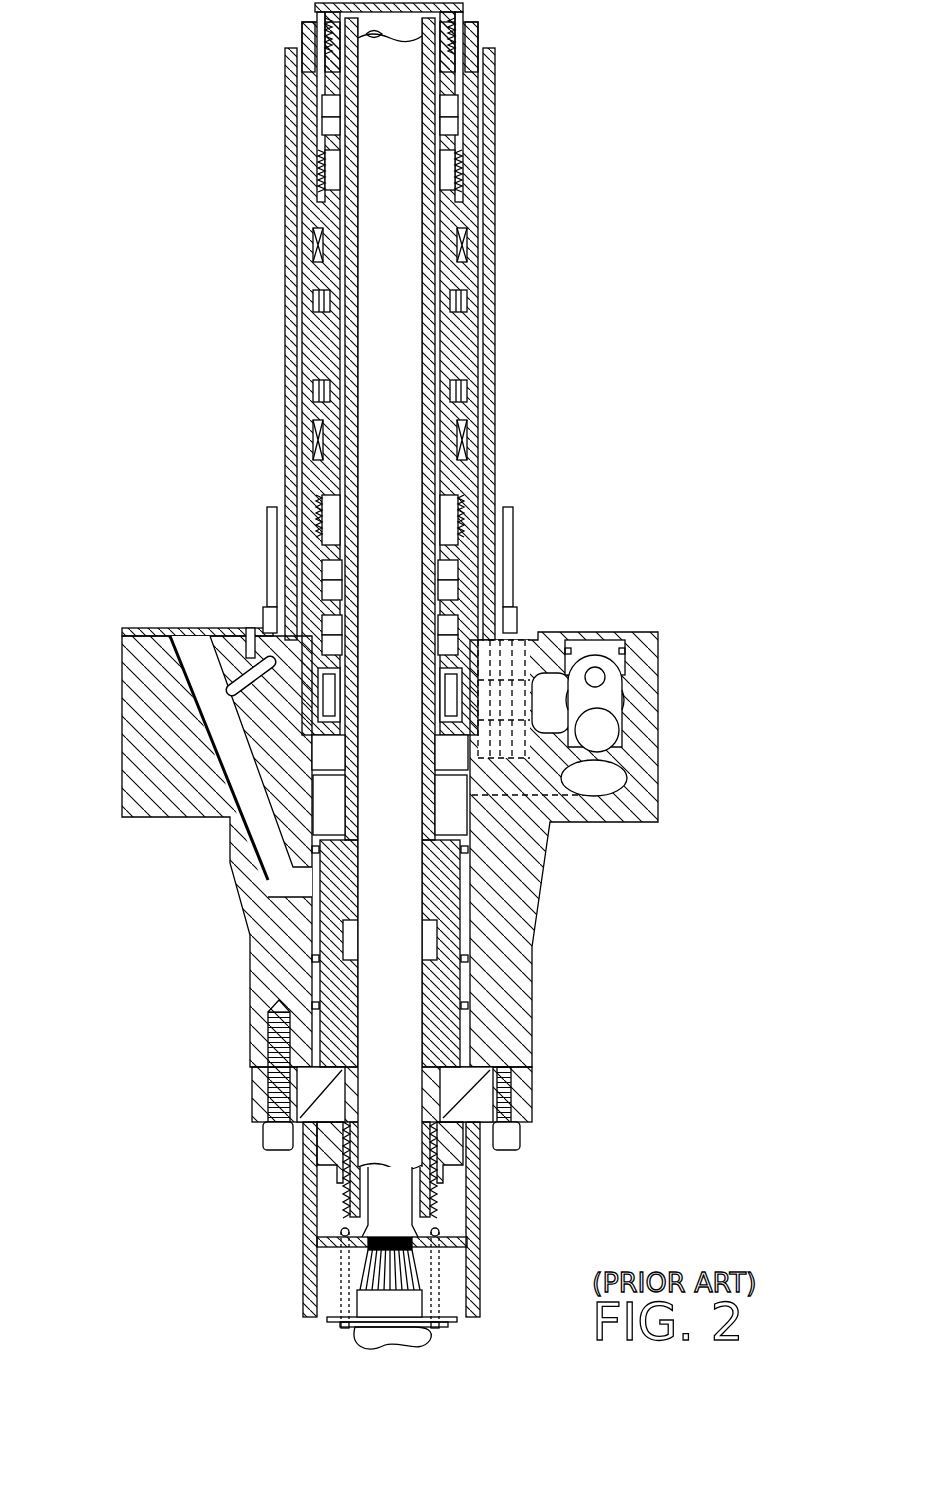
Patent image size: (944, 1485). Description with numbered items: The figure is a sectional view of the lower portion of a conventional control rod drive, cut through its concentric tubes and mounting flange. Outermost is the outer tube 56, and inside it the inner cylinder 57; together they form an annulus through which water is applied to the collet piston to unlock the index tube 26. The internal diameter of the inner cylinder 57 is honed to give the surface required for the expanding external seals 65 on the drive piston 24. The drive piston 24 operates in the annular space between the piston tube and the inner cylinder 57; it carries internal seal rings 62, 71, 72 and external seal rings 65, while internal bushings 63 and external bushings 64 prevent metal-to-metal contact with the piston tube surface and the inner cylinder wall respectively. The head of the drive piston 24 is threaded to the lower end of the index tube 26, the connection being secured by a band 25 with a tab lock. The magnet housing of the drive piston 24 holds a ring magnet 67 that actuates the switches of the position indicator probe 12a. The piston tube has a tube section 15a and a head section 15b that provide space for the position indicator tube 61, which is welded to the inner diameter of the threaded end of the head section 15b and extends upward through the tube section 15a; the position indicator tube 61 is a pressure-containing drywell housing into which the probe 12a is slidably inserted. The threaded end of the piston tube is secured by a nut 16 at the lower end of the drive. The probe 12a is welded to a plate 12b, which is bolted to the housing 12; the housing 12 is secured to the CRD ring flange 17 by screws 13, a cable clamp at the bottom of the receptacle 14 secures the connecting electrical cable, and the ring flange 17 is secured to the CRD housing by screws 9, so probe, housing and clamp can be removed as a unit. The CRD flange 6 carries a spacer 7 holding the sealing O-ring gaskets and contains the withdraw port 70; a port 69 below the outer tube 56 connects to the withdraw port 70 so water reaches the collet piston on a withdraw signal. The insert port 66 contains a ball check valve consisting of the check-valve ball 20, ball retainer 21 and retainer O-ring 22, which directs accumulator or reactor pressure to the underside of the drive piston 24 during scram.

The CRD flange 6 is at (122, 765).
The spacer 7 is at (140, 628).
The screws 9 is at (272, 1140).
The housing 12 is at (482, 1258).
The position indicator probe 12a is at (400, 1225).
The plate 12b is at (306, 1276).
The screws 13 is at (512, 1140).
The receptacle 14 is at (420, 1300).
The tube section 15a is at (440, 750).
The head section 15b is at (438, 860).
The nut 16 is at (462, 1200).
The CRD ring flange 17 is at (532, 1092).
The check-valve ball 20 is at (615, 762).
The ball retainer 21 is at (605, 735).
The retainer O-ring 22 is at (660, 645).
The drive piston 24 is at (322, 350).
The bands 25 is at (482, 58).
The index tube 26 is at (463, 10).
The outer tube 56 is at (495, 200).
The inner cylinder 57 is at (470, 340).
The position indicator tube 61 is at (408, 85).
The internal seal rings 62 is at (328, 128).
The internal bushings 63 is at (340, 170).
The external bushings 64 is at (462, 255).
The external seal rings 65 is at (460, 300).
The insert port 66 is at (600, 645).
The ring magnet 67 is at (332, 700).
The port 69 is at (196, 652).
The withdraw port 70 is at (200, 672).
The internal seal rings 71 is at (340, 645).
The internal seal rings 72 is at (340, 590).